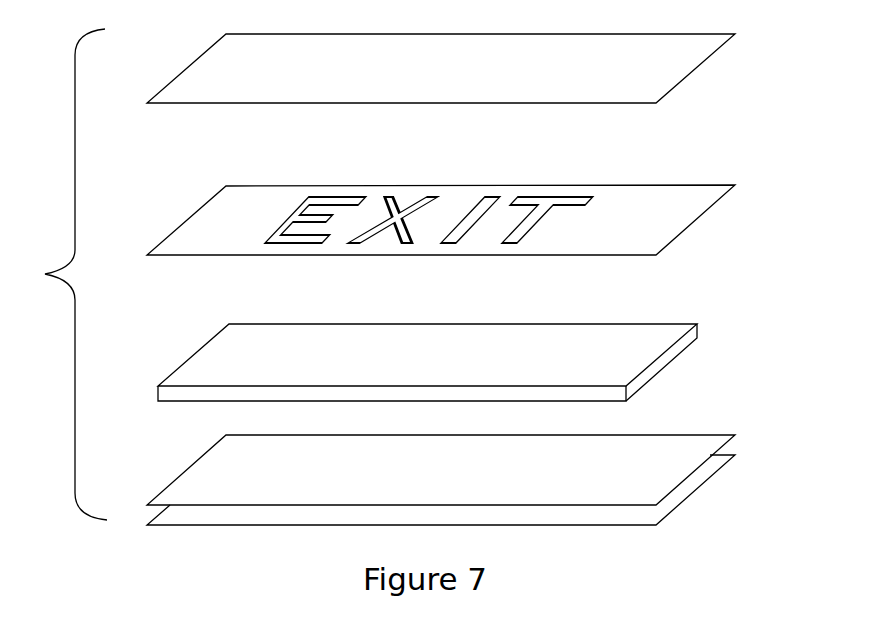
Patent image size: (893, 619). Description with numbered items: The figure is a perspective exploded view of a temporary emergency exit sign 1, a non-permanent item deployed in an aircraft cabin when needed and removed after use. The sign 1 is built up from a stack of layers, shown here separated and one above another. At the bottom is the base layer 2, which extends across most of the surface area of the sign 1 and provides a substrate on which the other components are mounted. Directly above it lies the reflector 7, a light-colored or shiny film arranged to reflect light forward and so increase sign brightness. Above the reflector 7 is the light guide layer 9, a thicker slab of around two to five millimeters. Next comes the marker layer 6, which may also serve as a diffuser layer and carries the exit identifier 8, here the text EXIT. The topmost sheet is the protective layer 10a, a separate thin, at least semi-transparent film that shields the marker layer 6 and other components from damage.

The temporary emergency exit sign 1 is at (66, 274).
The protective layer 10a is at (697, 70).
The exit identifier 8 is at (290, 220).
The marker layer 6 is at (695, 222).
The light guide layer 9 is at (660, 362).
The reflector 7 is at (697, 470).
The base layer 2 is at (672, 510).